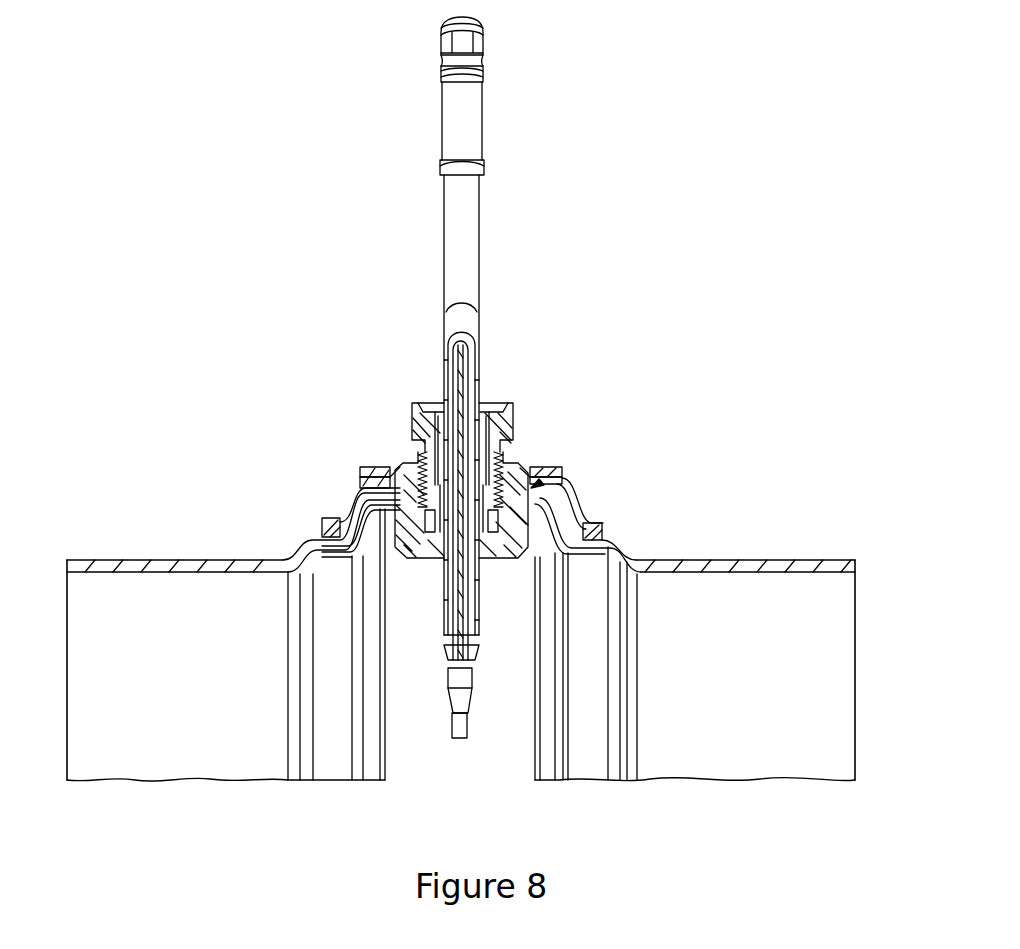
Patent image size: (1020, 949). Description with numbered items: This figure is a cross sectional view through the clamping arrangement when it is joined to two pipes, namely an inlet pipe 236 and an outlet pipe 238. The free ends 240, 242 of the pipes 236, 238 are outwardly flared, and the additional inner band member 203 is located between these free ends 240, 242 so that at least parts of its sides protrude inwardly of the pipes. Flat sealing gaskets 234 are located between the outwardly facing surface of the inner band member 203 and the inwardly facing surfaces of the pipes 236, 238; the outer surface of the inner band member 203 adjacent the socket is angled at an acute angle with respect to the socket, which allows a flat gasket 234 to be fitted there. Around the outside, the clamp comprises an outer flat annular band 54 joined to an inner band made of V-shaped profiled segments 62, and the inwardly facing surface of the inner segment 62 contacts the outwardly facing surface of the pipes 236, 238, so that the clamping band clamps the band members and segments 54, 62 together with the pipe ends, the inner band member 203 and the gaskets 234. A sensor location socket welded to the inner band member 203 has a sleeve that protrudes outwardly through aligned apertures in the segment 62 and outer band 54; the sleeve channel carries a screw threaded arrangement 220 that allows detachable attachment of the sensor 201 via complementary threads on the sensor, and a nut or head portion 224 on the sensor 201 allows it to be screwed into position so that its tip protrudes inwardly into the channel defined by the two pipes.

The sensor 201 is at (495, 232).
The nut or head portion 224 is at (510, 420).
The screw threaded arrangement 220 is at (517, 468).
The free end of outlet pipe 242 is at (538, 481).
The outer band 54 is at (563, 470).
The V-shaped profiled segments 62 is at (582, 496).
The flat sealing gaskets 234 is at (582, 523).
The inner band member 203 is at (604, 543).
The free end of inlet pipe 240 is at (358, 485).
The inlet pipe 236 is at (235, 628).
The outlet pipe 238 is at (797, 618).